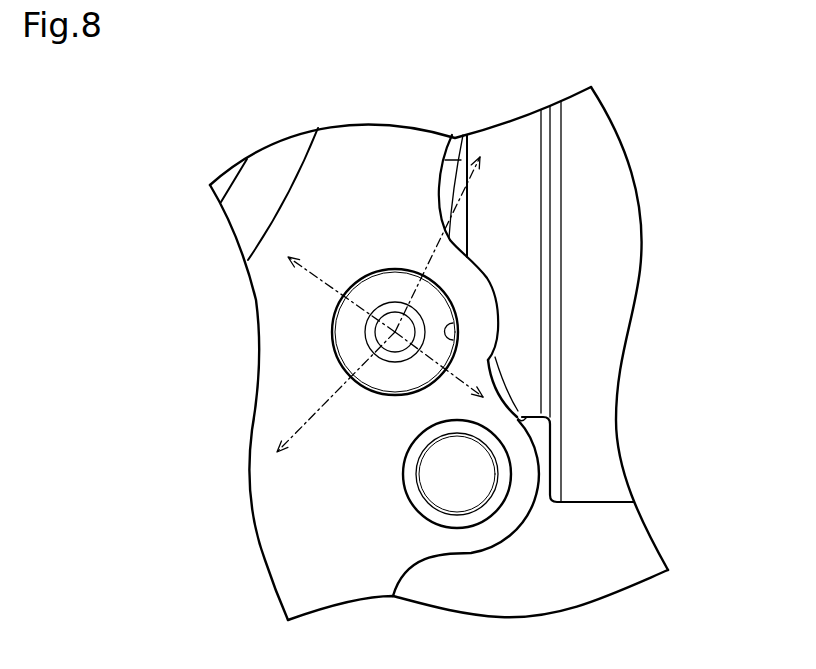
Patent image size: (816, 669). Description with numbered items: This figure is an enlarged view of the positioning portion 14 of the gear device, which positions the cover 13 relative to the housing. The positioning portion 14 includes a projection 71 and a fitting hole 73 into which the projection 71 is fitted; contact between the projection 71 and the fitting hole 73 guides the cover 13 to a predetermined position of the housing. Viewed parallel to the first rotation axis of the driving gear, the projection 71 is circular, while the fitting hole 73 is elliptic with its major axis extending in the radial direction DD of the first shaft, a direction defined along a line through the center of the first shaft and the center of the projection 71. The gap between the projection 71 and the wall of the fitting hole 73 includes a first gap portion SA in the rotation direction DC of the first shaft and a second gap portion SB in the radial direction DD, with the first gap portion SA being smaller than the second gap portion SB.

The cover 13 is at (363, 142).
The positioning portion 14 is at (393, 248).
The projection 71 is at (423, 302).
The fitting hole 73 is at (452, 334).
The radial direction DD is at (385, 320).
The rotation direction DC is at (454, 244).
The first gap portion SA is at (355, 382).
The second gap portion SB is at (336, 306).